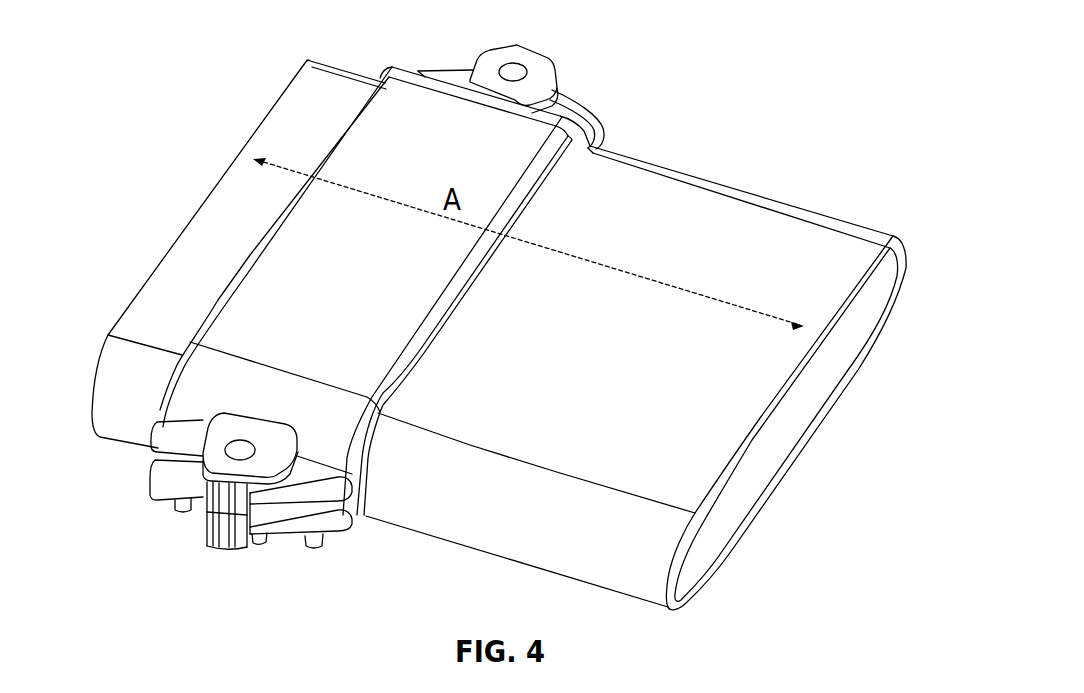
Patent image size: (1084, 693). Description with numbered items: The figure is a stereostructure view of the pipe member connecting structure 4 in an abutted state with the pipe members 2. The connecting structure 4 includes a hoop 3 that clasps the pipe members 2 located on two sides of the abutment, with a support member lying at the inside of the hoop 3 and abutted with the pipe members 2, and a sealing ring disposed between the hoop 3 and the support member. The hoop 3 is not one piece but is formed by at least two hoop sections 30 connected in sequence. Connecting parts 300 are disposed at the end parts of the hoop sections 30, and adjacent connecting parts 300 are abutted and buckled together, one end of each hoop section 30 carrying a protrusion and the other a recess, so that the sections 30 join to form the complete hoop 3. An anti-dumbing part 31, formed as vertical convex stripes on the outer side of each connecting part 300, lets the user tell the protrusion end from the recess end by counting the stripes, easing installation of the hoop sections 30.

The pipe member 2 is at (232, 230).
The hoop 3 is at (375, 331).
The hoop section 30 is at (382, 327).
The connecting part 300 is at (567, 108).
The anti-dumbing part 31 is at (247, 533).
The pipe member connecting structure 4 is at (618, 111).